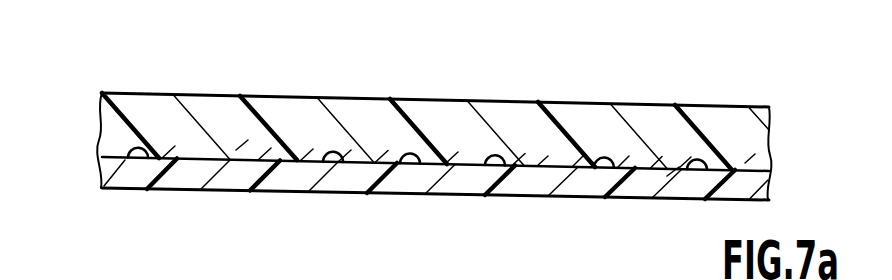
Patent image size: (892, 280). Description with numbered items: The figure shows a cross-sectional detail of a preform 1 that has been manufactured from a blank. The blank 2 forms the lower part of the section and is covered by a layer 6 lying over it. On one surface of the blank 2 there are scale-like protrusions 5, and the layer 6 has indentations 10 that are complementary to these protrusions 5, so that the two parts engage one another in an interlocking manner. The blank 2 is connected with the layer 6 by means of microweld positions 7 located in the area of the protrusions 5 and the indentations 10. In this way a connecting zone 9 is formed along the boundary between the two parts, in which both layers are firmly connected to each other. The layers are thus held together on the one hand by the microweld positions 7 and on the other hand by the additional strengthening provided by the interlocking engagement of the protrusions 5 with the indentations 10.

The preform 1 is at (87, 92).
The blank 2 is at (289, 189).
The protrusions 5 is at (674, 198).
The layer 6 is at (476, 125).
The microweld positions 7 is at (127, 153).
The connecting zone 9 is at (778, 147).
The indentations 10 is at (242, 156).